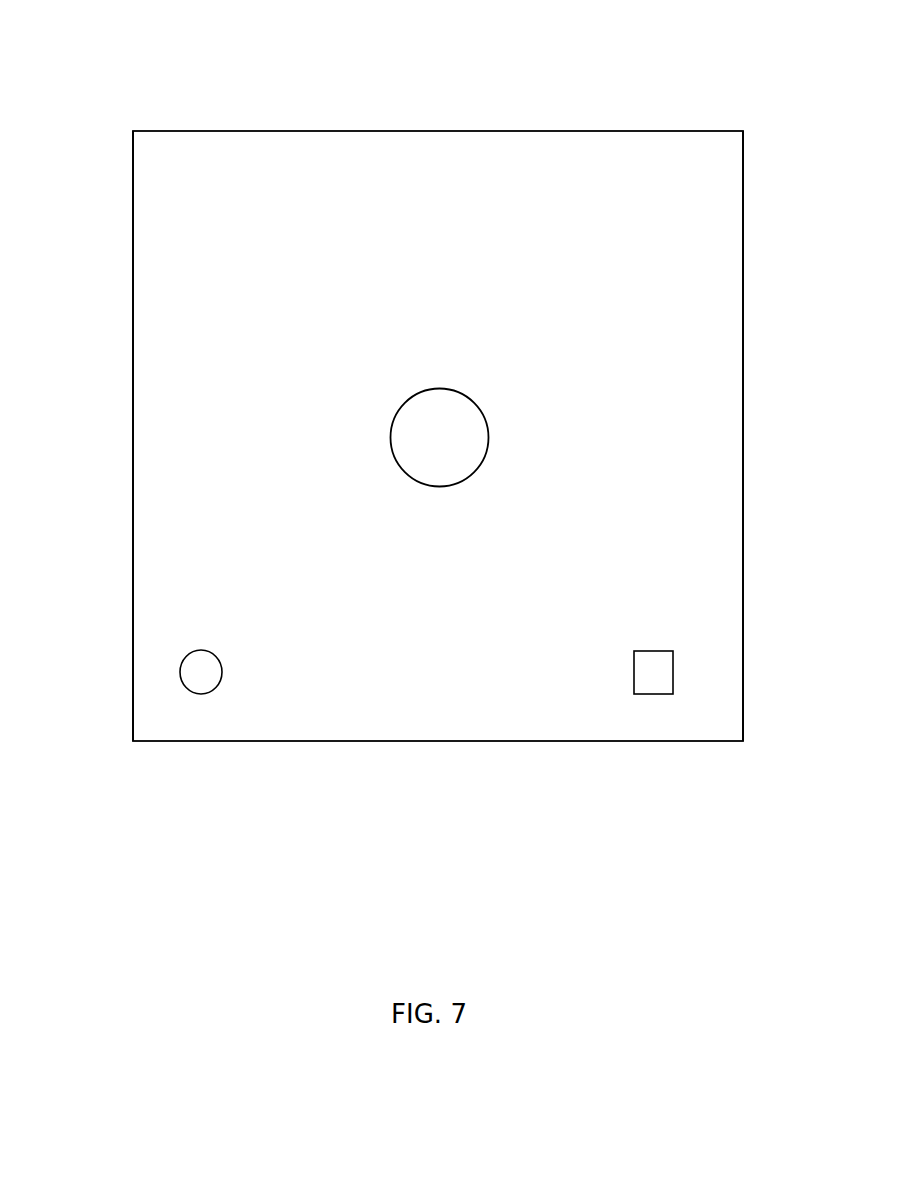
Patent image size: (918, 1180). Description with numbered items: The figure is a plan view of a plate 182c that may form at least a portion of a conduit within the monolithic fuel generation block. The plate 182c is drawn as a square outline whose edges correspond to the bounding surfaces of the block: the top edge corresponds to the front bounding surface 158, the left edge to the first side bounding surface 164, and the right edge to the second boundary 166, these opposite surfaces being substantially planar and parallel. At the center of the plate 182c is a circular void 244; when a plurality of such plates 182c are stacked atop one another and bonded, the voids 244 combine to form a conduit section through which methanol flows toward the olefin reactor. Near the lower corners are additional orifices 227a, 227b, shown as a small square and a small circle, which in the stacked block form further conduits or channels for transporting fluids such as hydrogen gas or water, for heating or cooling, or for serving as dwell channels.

The front bounding surface 158 is at (383, 131).
The plate 182c is at (133, 223).
The first side bounding surface 164 is at (133, 404).
The second boundary 166 is at (743, 365).
The void 244 is at (440, 438).
The additional orifice 227a is at (653, 662).
The additional orifice 227b is at (200, 665).